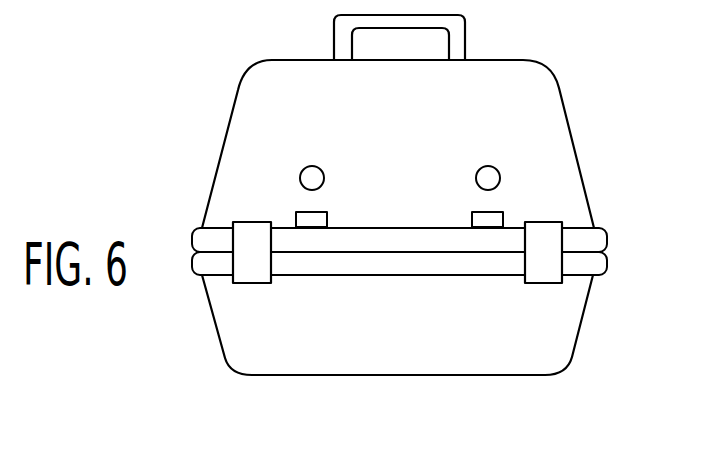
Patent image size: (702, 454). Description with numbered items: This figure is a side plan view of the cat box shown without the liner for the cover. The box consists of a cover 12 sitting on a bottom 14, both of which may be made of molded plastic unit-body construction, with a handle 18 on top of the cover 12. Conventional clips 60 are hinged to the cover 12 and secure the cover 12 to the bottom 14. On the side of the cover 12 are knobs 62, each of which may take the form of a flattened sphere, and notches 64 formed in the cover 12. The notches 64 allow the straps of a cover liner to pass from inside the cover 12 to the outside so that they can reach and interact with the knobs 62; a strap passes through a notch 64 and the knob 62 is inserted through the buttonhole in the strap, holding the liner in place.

The cover 12 is at (226, 126).
The bottom 14 is at (558, 322).
The handle 18 is at (458, 33).
The clips 60 is at (545, 273).
The knobs 62 is at (477, 173).
The notches 64 is at (472, 215).